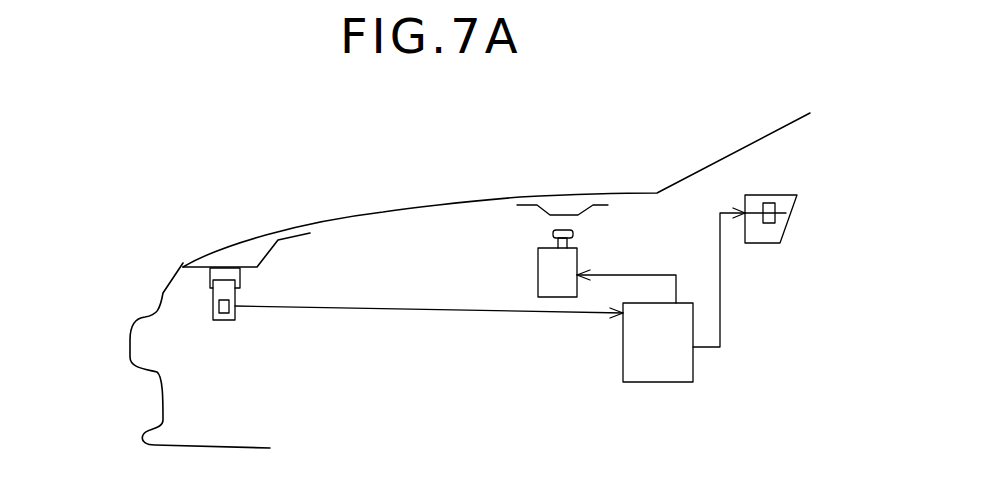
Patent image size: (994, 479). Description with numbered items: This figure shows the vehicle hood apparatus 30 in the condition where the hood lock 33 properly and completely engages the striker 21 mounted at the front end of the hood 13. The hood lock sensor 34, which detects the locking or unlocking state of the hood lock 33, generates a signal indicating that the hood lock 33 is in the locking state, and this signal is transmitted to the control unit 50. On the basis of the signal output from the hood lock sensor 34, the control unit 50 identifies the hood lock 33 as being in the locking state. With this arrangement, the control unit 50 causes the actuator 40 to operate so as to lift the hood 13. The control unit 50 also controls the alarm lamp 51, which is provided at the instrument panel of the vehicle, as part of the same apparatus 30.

The vehicle hood apparatus 30 is at (267, 137).
The hood 13 is at (383, 212).
The striker 21 is at (210, 276).
The hood lock 33 is at (213, 296).
The hood lock sensor 34 is at (212, 312).
The actuator 40 is at (578, 260).
The control unit 50 is at (693, 365).
The alarm lamp 51 is at (797, 213).